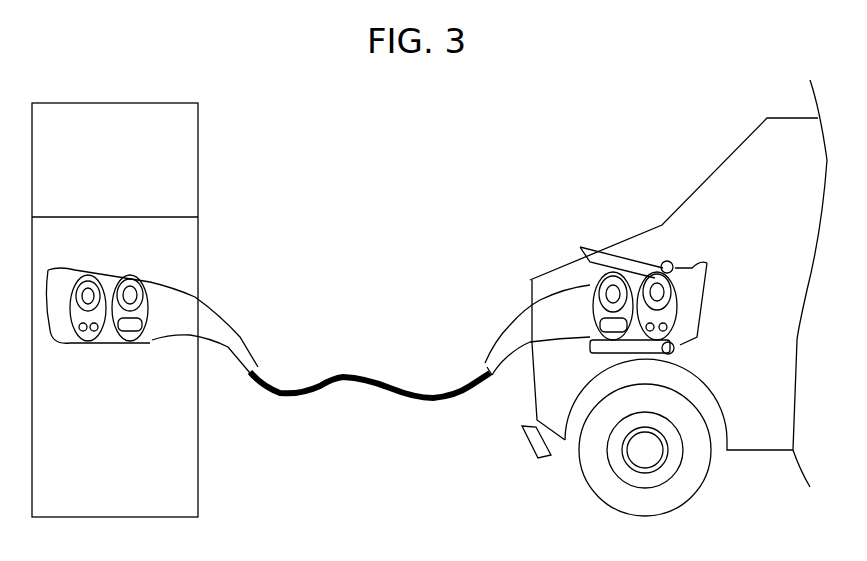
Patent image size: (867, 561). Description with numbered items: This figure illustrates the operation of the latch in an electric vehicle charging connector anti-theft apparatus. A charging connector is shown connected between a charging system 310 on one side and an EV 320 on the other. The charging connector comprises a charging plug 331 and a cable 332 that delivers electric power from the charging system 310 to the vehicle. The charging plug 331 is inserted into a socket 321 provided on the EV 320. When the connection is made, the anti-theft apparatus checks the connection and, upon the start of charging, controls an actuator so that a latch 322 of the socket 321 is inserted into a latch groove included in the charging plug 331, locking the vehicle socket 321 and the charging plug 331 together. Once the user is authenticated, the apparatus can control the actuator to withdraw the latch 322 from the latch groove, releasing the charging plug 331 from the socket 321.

The charging system 310 is at (167, 103).
The EV 320 is at (680, 205).
The socket 321 is at (695, 273).
The latch 322 is at (592, 254).
The charging plug 331 is at (523, 322).
The cable 332 is at (335, 377).